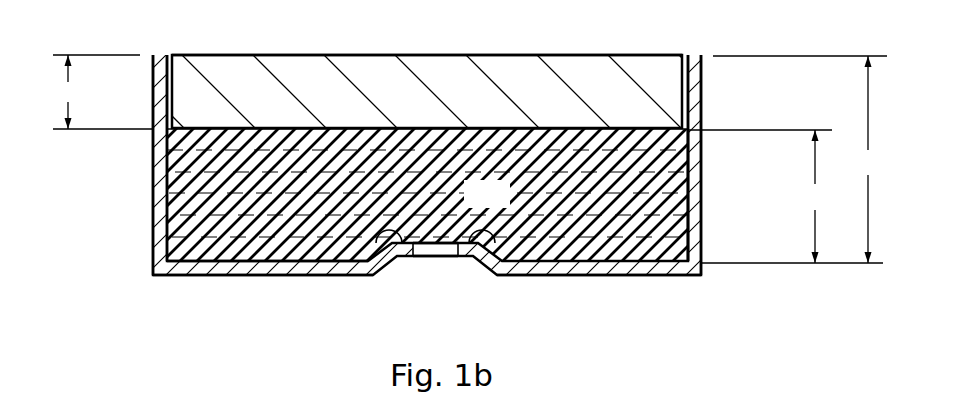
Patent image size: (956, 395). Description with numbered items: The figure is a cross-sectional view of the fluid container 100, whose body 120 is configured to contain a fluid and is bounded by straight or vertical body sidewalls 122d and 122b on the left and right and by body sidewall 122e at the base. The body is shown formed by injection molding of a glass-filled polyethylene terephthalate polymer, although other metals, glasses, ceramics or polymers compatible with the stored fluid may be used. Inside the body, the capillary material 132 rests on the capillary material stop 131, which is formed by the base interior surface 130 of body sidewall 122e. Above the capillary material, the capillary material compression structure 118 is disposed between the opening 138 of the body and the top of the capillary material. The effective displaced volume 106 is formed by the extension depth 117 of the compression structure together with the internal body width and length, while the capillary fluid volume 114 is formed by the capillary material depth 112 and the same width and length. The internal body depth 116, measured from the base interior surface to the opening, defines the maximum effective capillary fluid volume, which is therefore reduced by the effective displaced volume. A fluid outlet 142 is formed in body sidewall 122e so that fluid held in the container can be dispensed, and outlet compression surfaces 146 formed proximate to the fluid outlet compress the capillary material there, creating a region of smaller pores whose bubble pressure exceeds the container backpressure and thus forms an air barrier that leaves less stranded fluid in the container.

The fluid container 100 is at (706, 26).
The effective displaced volume 106 is at (440, 103).
The capillary material depth 112 is at (785, 196).
The capillary fluid volume 114 is at (502, 205).
The internal body depth 116 is at (800, 159).
The extension depth 117 is at (103, 92).
The capillary material compression structure 118 is at (242, 70).
The body 120 is at (697, 153).
The body sidewall 122b is at (697, 231).
The body sidewall 122d is at (162, 143).
The body sidewall 122e is at (258, 277).
The base interior surface 130 is at (207, 260).
The capillary material stop 131 is at (700, 215).
The capillary material 132 is at (210, 218).
The opening 138 is at (540, 45).
The fluid outlet 142 is at (435, 248).
The outlet compression surface 146 is at (376, 243).